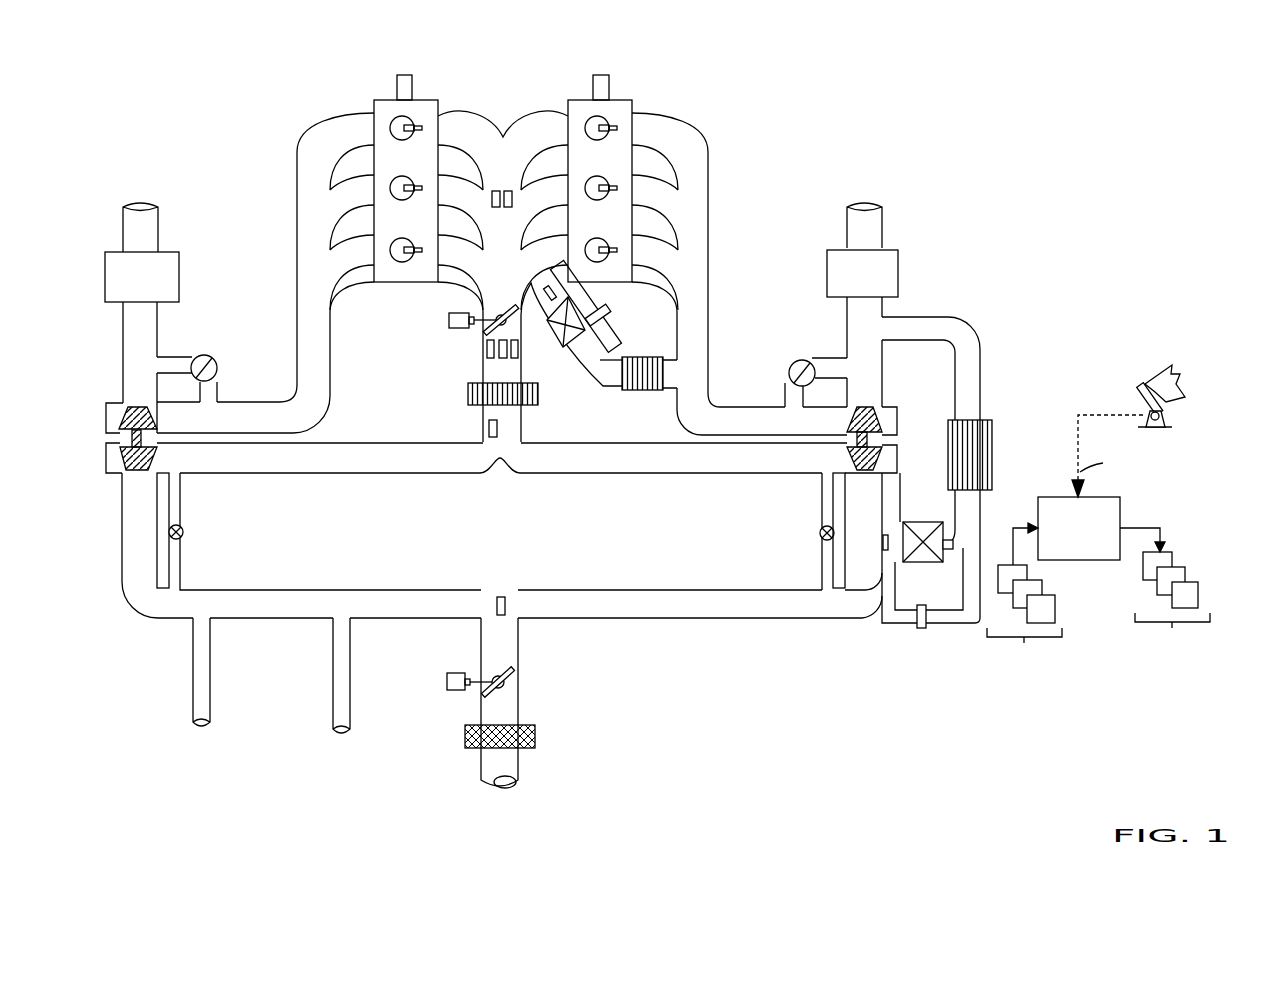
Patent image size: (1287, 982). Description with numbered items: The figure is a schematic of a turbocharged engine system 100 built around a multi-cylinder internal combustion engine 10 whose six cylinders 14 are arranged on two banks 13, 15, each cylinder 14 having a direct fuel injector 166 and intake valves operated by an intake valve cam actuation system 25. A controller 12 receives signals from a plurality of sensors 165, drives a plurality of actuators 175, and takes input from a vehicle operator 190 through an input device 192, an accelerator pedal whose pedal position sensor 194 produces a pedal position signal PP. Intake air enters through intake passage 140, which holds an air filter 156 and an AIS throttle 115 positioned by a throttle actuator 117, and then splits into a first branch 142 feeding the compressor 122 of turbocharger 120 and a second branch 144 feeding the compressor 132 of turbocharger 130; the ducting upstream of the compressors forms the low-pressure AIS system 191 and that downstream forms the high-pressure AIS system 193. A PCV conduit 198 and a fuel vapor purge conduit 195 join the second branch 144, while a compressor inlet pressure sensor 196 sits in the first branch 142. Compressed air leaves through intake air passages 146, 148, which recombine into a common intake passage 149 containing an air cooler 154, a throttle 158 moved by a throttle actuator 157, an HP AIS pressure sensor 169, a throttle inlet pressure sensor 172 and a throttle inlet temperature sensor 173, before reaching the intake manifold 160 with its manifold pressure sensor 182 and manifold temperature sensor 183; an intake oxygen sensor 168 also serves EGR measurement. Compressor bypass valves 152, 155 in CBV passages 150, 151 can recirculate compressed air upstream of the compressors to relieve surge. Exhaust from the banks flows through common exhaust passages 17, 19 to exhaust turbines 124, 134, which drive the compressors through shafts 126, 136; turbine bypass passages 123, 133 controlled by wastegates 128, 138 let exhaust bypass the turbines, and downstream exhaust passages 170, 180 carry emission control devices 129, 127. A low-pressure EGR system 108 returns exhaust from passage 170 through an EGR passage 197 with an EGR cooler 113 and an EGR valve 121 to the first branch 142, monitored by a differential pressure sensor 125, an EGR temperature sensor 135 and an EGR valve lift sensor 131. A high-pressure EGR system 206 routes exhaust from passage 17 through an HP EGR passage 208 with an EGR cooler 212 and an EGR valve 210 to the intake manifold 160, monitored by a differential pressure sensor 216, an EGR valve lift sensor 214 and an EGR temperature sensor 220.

The internal combustion engine 10 is at (838, 108).
The controller 12 is at (1090, 487).
The first bank 13 is at (615, 99).
The cylinder 14 is at (597, 174).
The second bank 15 is at (386, 98).
The common exhaust passage 17 is at (708, 342).
The common exhaust passage 19 is at (297, 330).
The intake valve cam actuation system 25 is at (406, 76).
The turbocharged engine system 100 is at (178, 150).
The low-pressure EGR system 108 is at (971, 299).
The EGR cooler 113 is at (992, 445).
The AIS throttle 115 is at (498, 675).
The throttle actuator 117 is at (452, 673).
The turbocharger 120 is at (863, 380).
The EGR valve 121 is at (920, 565).
The compressor 122 is at (884, 470).
The turbine bypass passage 123 is at (830, 358).
The exhaust turbine 124 is at (882, 408).
The differential pressure over valve sensor 125 is at (926, 630).
The shaft 126 is at (882, 447).
The emission control device 127 is at (142, 342).
The wastegate 128 is at (790, 364).
The emission control device 129 is at (862, 328).
The turbocharger 130 is at (139, 394).
The EGR valve lift sensor 131 is at (952, 540).
The compressor 132 is at (124, 470).
The turbine bypass passage 133 is at (178, 357).
The exhaust turbine 134 is at (123, 405).
The EGR temperature sensor 135 is at (888, 536).
The shaft 136 is at (120, 447).
The wastegate 138 is at (215, 361).
The intake passage 140 is at (518, 772).
The first branch of intake passage 142 is at (670, 590).
The second branch of intake passage 144 is at (278, 590).
The intake air passage 146 is at (658, 475).
The intake air passage 148 is at (250, 474).
The common intake passage 149 is at (483, 347).
The CBV passage 150 is at (180, 500).
The CBV passage 151 is at (822, 545).
The compressor bypass valve 152 is at (184, 531).
The air cooler 154 is at (538, 400).
The compressor bypass valve 155 is at (820, 531).
The air filter 156 is at (535, 732).
The throttle actuator 157 is at (455, 313).
The throttle 158 is at (500, 314).
The intake manifold 160 is at (503, 116).
The sensors 165 is at (1024, 593).
The fuel injector 166 is at (610, 183).
The intake oxygen sensor 168 is at (487, 356).
The HP AIS pressure sensor 169 is at (487, 432).
The exhaust passage 170 is at (847, 236).
The throttle inlet pressure sensor 172 is at (500, 360).
The throttle inlet temperature sensor 173 is at (516, 360).
The actuators 175 is at (1165, 588).
The exhaust passage 180 is at (158, 245).
The intake manifold pressure sensor 182 is at (480, 199).
The intake manifold temperature sensor 183 is at (526, 199).
The vehicle operator 190 is at (1182, 380).
The low-pressure AIS system 191 is at (502, 545).
The input device 192 is at (1137, 392).
The high-pressure AIS system 193 is at (502, 457).
The pedal position sensor 194 is at (1165, 417).
The fuel vapor purge conduit 195 is at (210, 683).
The compressor inlet pressure sensor 196 is at (497, 595).
The EGR passage 197 is at (981, 362).
The PCV conduit 198 is at (350, 688).
The HP EGR system 206 is at (593, 408).
The HP EGR passage 208 is at (598, 388).
The EGR valve 210 is at (551, 338).
The EGR cooler 212 is at (643, 357).
The EGR valve lift sensor 214 is at (608, 340).
The differential pressure over valve sensor 216 is at (604, 310).
The EGR temperature sensor 220 is at (549, 286).